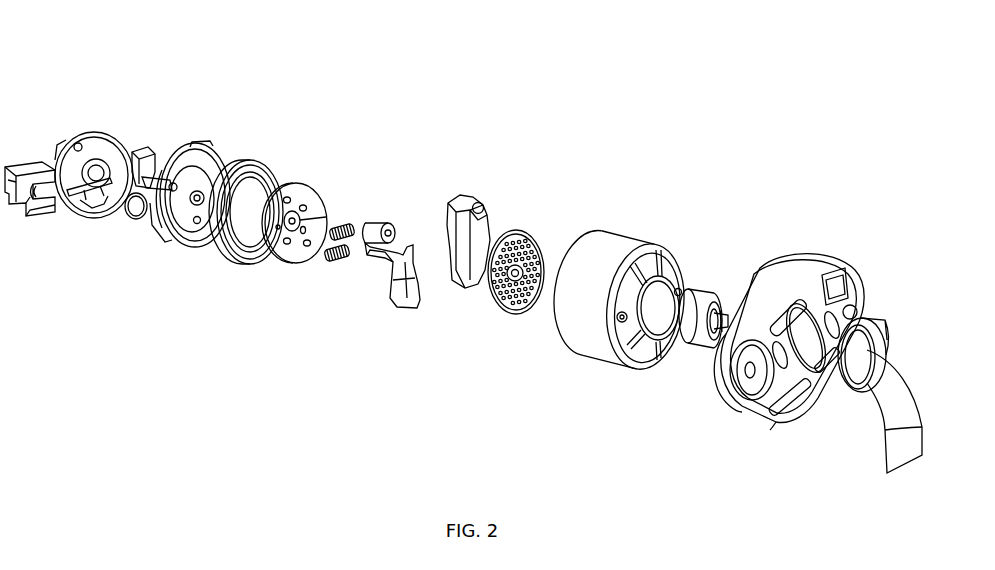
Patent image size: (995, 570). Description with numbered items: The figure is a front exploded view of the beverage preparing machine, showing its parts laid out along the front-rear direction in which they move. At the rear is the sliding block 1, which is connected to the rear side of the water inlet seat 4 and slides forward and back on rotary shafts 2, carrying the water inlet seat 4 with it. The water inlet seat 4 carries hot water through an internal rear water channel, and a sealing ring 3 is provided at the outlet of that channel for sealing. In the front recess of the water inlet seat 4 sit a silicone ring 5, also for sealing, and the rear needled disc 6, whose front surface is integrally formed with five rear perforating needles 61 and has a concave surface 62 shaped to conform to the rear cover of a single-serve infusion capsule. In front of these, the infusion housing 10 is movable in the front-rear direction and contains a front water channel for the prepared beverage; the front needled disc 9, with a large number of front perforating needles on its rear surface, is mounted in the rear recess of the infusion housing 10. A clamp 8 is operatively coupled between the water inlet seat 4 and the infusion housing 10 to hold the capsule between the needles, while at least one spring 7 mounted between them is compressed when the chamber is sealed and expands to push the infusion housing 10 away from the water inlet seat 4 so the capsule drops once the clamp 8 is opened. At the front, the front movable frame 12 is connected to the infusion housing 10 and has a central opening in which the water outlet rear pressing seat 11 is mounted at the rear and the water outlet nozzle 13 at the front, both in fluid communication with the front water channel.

The sliding block 1 is at (66, 160).
The rotary shafts 2 is at (106, 172).
The sealing ring 3 is at (136, 146).
The water inlet seat 4 is at (190, 178).
The silicone ring 5 is at (247, 163).
The rear needled disc 6 is at (294, 203).
The rear perforating needle 61 is at (289, 246).
The concave surface 62 is at (309, 248).
The spring 7 is at (340, 226).
The clamp 8 is at (377, 224).
The front needled disc 9 is at (502, 236).
The infusion housing 10 is at (590, 292).
The water outlet rear pressing seat 11 is at (697, 292).
The front movable frame 12 is at (783, 268).
The water outlet nozzle 13 is at (905, 405).